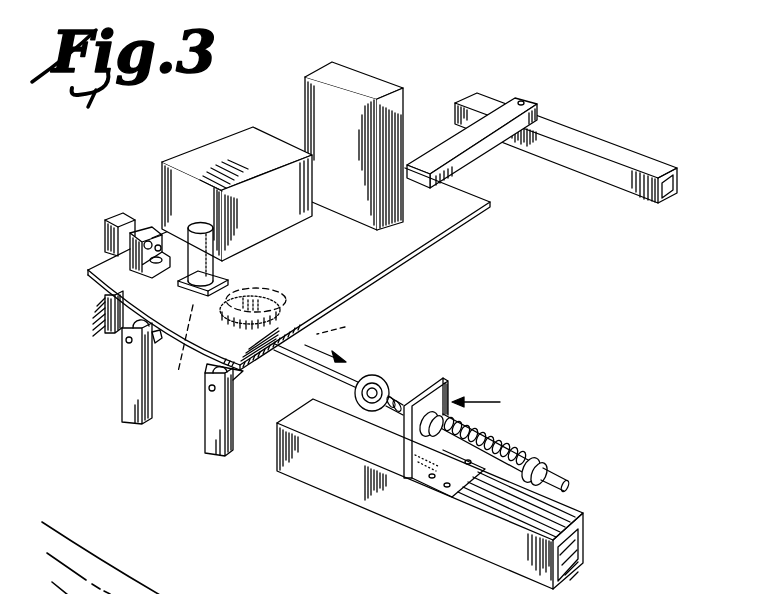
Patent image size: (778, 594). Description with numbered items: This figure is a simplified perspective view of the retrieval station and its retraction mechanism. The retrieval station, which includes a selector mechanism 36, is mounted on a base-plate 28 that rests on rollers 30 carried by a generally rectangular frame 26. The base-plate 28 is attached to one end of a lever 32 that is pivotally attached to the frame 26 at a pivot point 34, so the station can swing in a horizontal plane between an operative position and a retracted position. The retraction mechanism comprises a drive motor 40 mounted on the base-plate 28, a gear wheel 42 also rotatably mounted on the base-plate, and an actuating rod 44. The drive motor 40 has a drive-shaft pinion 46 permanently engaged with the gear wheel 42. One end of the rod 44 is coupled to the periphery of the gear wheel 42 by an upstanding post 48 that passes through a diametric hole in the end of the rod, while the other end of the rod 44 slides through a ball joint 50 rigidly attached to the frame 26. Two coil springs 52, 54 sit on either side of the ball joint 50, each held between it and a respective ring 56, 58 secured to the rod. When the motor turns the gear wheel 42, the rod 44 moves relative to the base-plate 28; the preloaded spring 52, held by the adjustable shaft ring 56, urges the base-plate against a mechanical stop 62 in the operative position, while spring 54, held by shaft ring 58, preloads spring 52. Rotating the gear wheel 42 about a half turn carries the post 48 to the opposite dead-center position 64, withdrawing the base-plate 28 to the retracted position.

The frame 26 is at (597, 143).
The base-plate 28 is at (407, 258).
The rollers 30 is at (147, 330).
The lever 32 is at (475, 150).
The pivot point 34 is at (522, 98).
The selector mechanism 36 is at (252, 112).
The drive motor 40 is at (228, 235).
The gear wheel 42 is at (284, 284).
The actuating rod 44 is at (357, 374).
The drive-shaft pinion 46 is at (174, 358).
The upstanding post 48 is at (328, 348).
The ball joint 50 is at (427, 380).
The coil spring 52 is at (416, 394).
The coil spring 54 is at (507, 450).
The adjustable shaft ring 56 is at (392, 382).
The shaft ring 58 is at (547, 471).
The mechanical stop 62 is at (141, 203).
The opposite dead-center position 64 is at (218, 290).